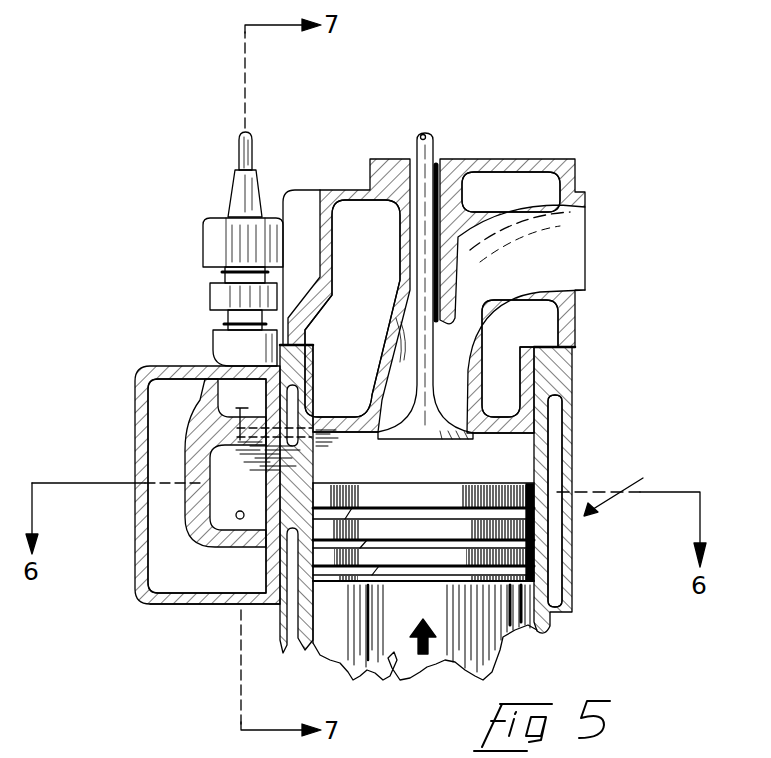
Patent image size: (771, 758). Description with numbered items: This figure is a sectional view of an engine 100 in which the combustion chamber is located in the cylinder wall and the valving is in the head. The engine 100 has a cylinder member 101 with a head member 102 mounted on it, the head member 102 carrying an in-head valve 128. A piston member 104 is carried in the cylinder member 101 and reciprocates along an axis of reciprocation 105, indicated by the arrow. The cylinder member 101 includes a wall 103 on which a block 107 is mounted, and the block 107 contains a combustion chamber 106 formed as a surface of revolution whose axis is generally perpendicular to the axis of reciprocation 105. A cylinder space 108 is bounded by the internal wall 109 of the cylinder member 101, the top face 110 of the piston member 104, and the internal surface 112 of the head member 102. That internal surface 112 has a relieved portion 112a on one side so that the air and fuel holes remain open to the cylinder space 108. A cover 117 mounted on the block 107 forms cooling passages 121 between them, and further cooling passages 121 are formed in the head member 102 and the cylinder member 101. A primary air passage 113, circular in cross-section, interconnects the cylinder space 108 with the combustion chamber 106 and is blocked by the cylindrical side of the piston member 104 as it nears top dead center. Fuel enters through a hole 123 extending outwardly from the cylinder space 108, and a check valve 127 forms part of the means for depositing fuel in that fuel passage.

The engine 100 is at (632, 491).
The cylinder member 101 is at (576, 597).
The head member 102 is at (558, 157).
The wall 103 is at (277, 621).
The piston member 104 is at (347, 655).
The axis of reciprocation 105 is at (430, 647).
The combustion chamber 106 is at (232, 540).
The block 107 is at (190, 603).
The cylinder space 108 is at (524, 472).
The internal wall 109 is at (525, 632).
The top face 110 is at (418, 483).
The internal surface 112 is at (552, 438).
The relieved portion 112a is at (359, 378).
The primary air passage 113 is at (318, 468).
The cover 117 is at (137, 507).
The cooling passages 121 is at (364, 232).
The hole 123 is at (195, 367).
The check valve 127 is at (203, 212).
The in-head valve 128 is at (423, 130).